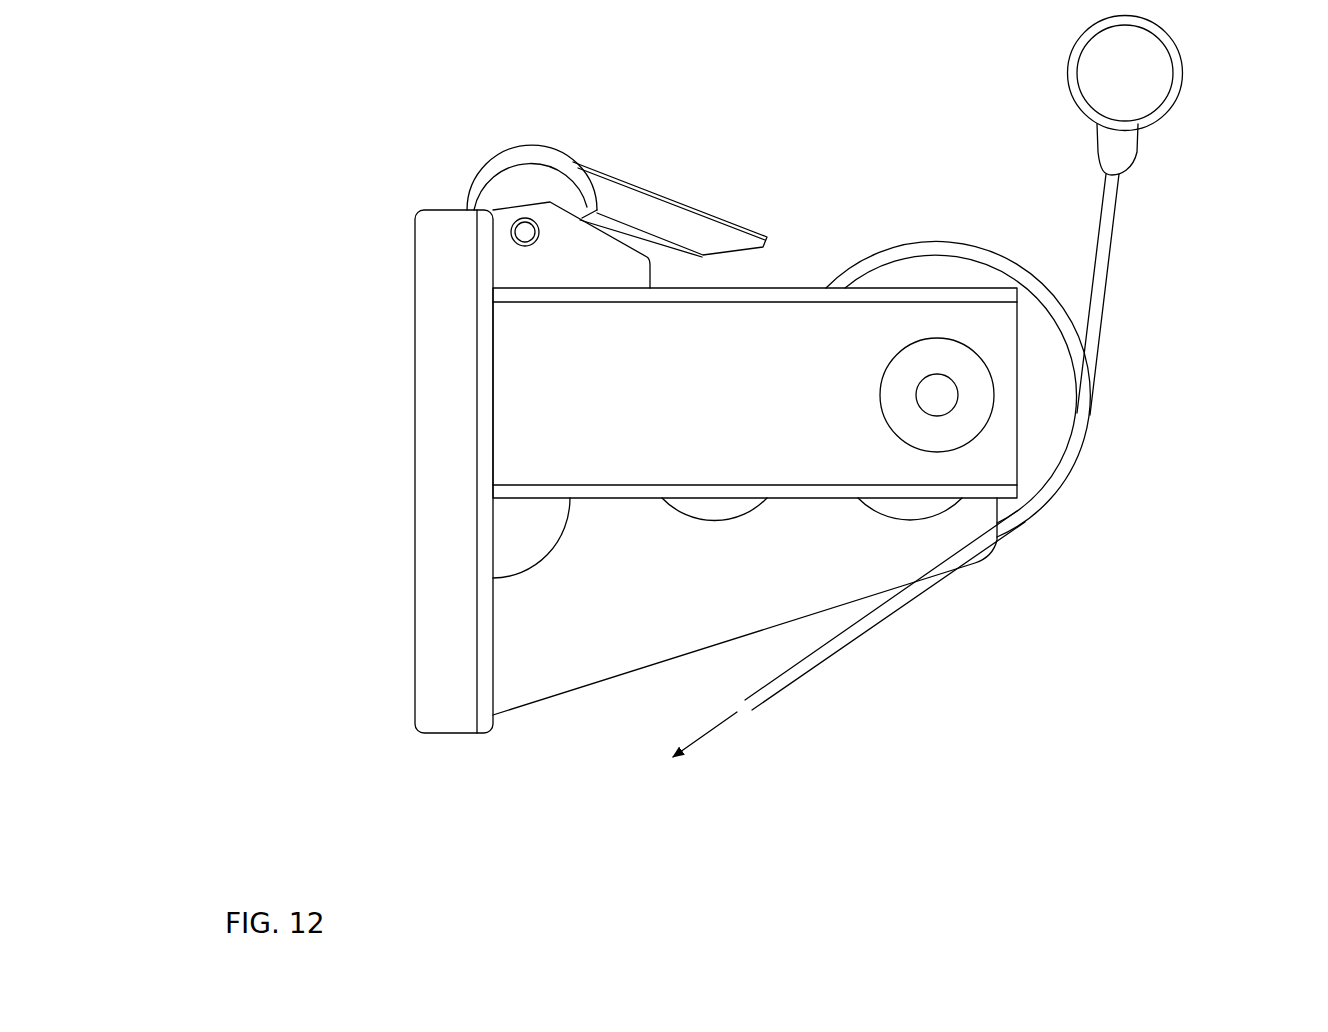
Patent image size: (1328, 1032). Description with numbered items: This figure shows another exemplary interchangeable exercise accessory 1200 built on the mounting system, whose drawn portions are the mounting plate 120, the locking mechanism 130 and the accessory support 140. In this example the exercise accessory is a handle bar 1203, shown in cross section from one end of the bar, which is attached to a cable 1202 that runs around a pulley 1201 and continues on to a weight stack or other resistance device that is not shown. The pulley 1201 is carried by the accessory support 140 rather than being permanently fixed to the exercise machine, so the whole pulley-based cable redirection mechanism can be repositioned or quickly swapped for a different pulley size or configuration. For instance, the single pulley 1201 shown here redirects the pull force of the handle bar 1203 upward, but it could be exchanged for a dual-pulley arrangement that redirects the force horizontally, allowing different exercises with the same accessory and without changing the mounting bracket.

The mounting plate 120 is at (390, 535).
The locking mechanism 130 is at (587, 113).
The accessory support 140 is at (797, 267).
The pulley assembly 1200 is at (818, 405).
The pulley 1201 is at (1047, 417).
The cable 1202 is at (1102, 268).
The handle bar 1203 is at (1147, 73).